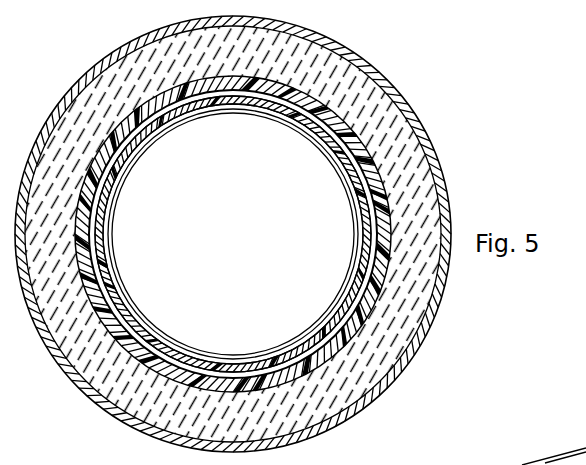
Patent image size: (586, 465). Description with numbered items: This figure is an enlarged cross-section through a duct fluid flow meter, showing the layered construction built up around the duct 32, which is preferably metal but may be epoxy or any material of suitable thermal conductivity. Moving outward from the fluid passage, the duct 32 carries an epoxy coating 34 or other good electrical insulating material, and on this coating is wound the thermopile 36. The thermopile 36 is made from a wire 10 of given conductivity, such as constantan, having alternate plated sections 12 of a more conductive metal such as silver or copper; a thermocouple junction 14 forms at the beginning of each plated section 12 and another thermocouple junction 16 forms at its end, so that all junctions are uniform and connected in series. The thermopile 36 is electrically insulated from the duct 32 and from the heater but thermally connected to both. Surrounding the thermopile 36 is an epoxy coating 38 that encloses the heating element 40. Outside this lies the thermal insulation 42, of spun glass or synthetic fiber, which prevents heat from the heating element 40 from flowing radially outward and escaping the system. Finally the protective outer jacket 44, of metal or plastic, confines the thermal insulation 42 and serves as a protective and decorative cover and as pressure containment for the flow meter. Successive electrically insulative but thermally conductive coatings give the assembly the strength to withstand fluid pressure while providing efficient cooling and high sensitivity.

The wire 10 is at (365, 267).
The plated section 12 is at (95, 264).
The thermocouple junction 14 is at (237, 92).
The thermocouple junction 16 is at (227, 377).
The duct 32 is at (108, 220).
The epoxy coating 34 is at (115, 163).
The thermopile 36 is at (177, 103).
The epoxy coating 38 is at (383, 220).
The heating element 40 is at (252, 103).
The thermal insulation 42 is at (423, 185).
The protective outer jacket 44 is at (428, 132).